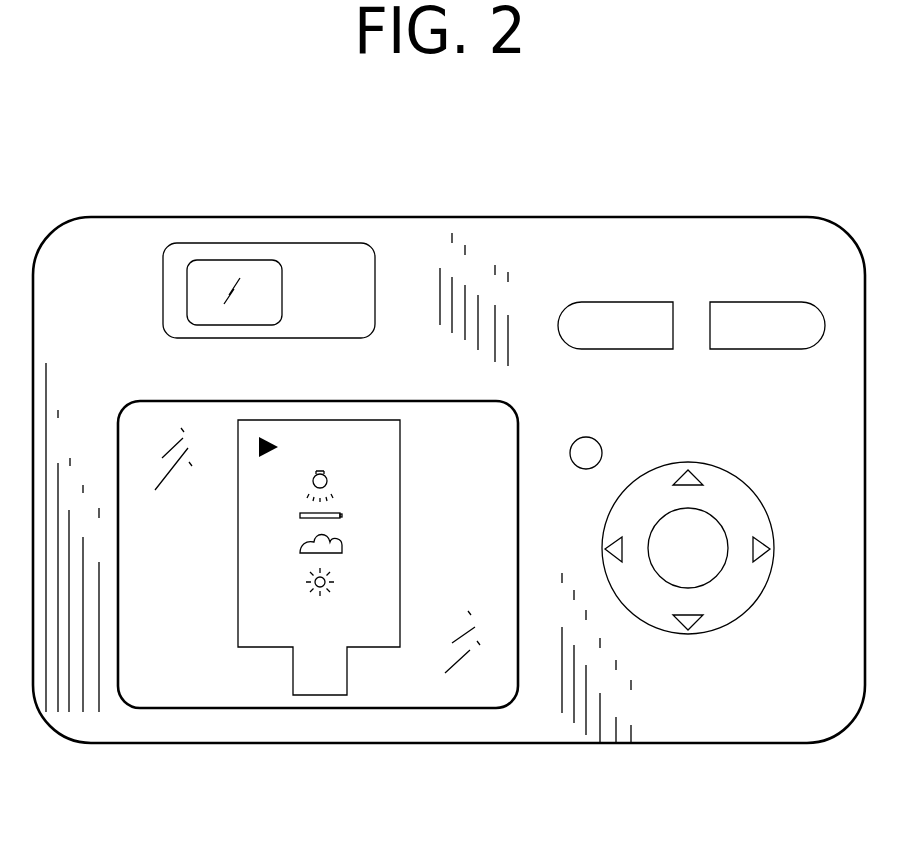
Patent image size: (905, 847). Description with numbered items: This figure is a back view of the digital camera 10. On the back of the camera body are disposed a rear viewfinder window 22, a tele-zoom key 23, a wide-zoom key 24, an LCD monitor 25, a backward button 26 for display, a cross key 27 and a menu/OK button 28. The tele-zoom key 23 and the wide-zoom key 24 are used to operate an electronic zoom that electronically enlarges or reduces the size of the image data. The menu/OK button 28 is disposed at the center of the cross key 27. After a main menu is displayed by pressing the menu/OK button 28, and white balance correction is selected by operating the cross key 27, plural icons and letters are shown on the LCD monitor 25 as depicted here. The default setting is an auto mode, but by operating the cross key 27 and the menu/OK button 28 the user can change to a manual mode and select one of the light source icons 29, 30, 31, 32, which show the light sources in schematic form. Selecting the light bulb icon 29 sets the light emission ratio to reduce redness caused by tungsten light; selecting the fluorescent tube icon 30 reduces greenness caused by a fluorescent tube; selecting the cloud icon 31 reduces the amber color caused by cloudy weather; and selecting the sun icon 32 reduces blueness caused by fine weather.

The digital camera 10 is at (295, 200).
The rear viewfinder window 22 is at (230, 272).
The tele-zoom key 23 is at (764, 302).
The wide-zoom key 24 is at (618, 302).
The LCD monitor 25 is at (153, 725).
The backward button 26 is at (587, 452).
The cross key 27 is at (745, 510).
The menu/OK button 28 is at (712, 562).
The light source icon of a light bulb 29 is at (338, 482).
The light source icon of the fluorescent tube 30 is at (342, 514).
The light source icon of a cloud 31 is at (343, 545).
The light source icon of the sun 32 is at (338, 578).